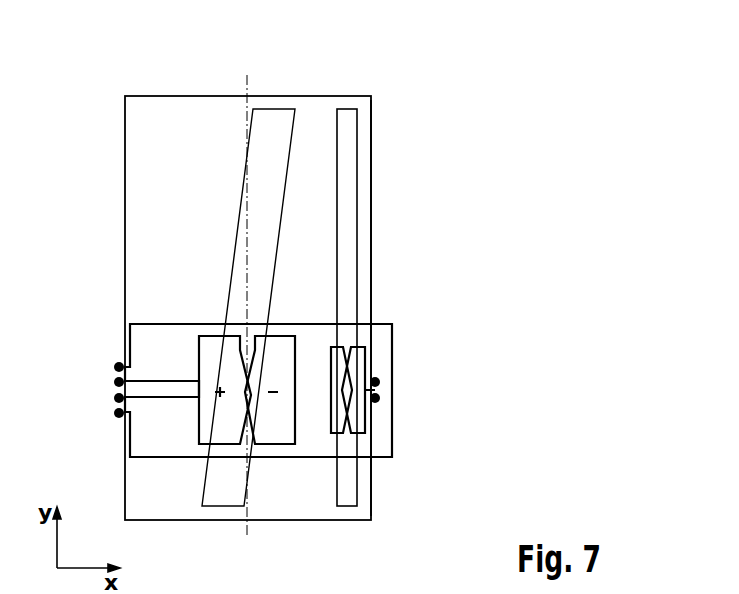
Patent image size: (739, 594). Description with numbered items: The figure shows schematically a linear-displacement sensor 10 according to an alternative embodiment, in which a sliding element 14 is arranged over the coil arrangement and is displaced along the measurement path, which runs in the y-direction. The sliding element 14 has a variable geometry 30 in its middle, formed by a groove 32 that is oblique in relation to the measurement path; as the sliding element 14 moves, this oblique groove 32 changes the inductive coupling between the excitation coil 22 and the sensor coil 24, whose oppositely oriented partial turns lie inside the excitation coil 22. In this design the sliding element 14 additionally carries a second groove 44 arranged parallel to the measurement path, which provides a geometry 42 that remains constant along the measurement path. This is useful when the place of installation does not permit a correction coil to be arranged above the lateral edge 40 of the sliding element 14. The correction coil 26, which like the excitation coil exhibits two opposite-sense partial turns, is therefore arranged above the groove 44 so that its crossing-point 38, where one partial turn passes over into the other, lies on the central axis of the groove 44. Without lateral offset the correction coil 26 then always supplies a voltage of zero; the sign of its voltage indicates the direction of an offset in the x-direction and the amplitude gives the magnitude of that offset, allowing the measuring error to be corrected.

The linear-displacement sensor 10 is at (419, 98).
The sliding element 14 is at (203, 108).
The excitation coil 22 is at (392, 437).
The sensor coil 24 is at (282, 445).
The correction coil 26 is at (365, 355).
The variable geometry 30 is at (266, 119).
The groove 32 is at (285, 111).
The crossing-point 38 is at (378, 391).
The lateral edge 40 is at (372, 167).
The constant geometry 42 is at (421, 135).
The groove 44 is at (347, 120).